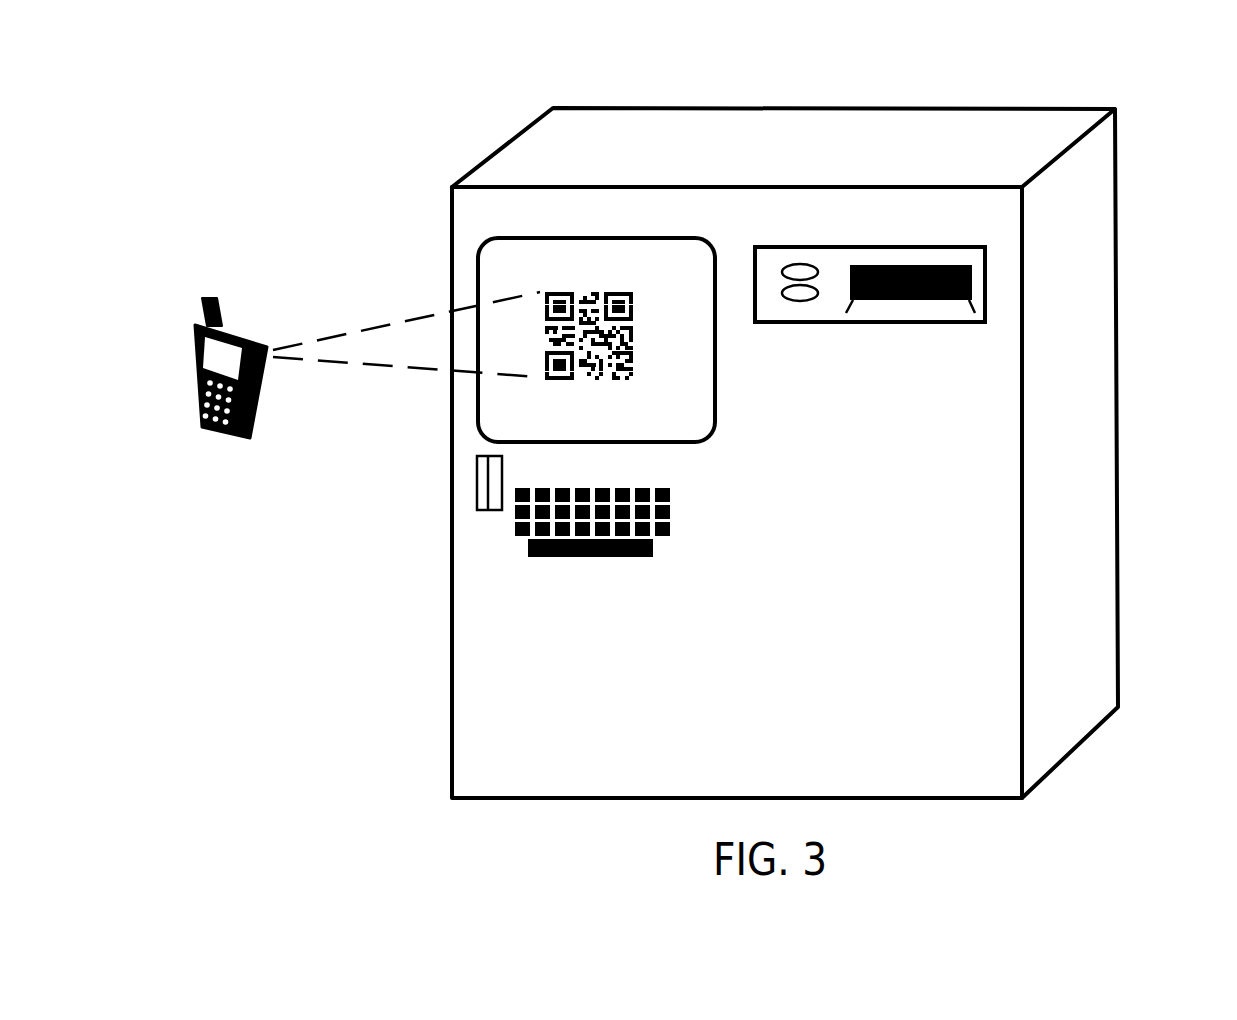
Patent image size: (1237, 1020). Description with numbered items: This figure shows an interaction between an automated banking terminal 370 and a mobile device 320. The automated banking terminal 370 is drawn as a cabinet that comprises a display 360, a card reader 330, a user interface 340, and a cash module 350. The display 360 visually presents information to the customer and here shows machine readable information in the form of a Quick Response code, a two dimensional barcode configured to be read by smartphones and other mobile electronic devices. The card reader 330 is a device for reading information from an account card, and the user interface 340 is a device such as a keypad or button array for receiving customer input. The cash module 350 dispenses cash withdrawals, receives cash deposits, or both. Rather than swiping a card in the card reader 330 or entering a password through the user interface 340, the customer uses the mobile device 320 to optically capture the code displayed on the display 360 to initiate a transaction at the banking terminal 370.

The mobile device 320 is at (200, 438).
The card reader 330 is at (469, 506).
The user interface 340 is at (506, 535).
The cash module 350 is at (1000, 282).
The display 360 is at (470, 431).
The automated banking terminal 370 is at (1128, 133).